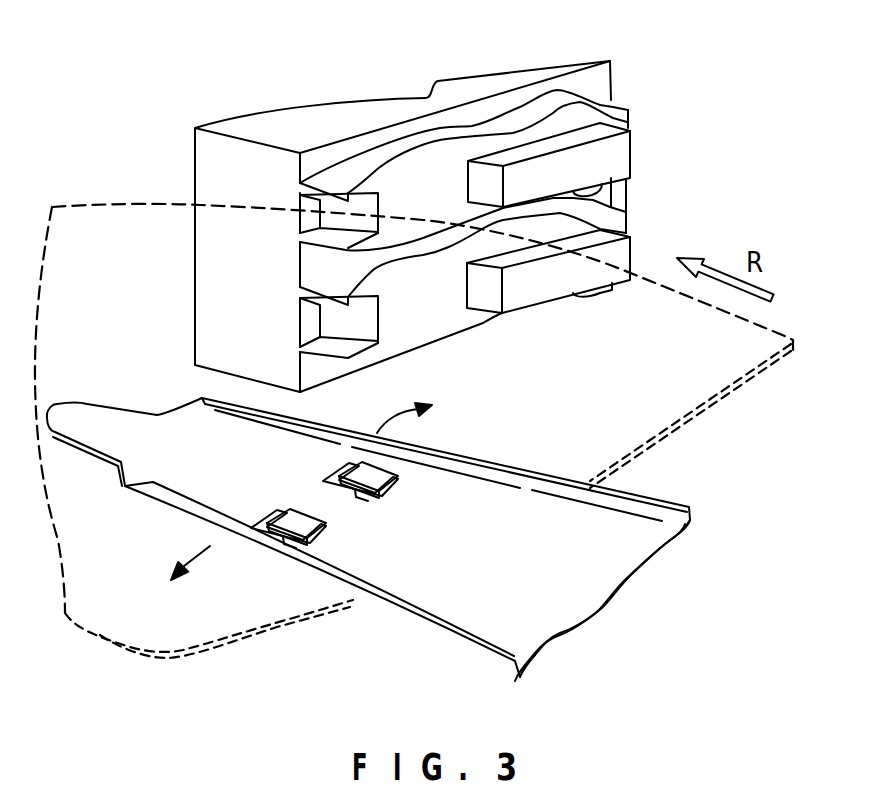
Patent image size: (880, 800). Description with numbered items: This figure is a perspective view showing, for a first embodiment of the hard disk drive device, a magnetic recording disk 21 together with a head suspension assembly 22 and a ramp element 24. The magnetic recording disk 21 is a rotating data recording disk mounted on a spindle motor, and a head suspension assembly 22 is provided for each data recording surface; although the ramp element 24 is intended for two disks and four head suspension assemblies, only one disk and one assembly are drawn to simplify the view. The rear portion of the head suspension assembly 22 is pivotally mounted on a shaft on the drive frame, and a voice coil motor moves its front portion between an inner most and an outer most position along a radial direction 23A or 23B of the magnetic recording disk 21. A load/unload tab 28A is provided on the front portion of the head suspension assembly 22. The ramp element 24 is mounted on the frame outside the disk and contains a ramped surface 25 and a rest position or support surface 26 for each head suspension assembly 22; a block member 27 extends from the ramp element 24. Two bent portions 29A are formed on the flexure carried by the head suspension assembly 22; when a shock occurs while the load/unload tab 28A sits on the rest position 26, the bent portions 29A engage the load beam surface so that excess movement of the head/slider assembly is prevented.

The magnetic recording disk 21 is at (722, 362).
The head suspension assembly 22 is at (470, 613).
The radial direction 23A is at (199, 558).
The radial direction 23B is at (405, 422).
The ramp element 24 is at (253, 127).
The ramped surface 25 is at (343, 173).
The rest position 26 is at (535, 115).
The block member 27 is at (620, 155).
The load/unload tab 28A is at (97, 420).
The bent portion 29A is at (322, 537).